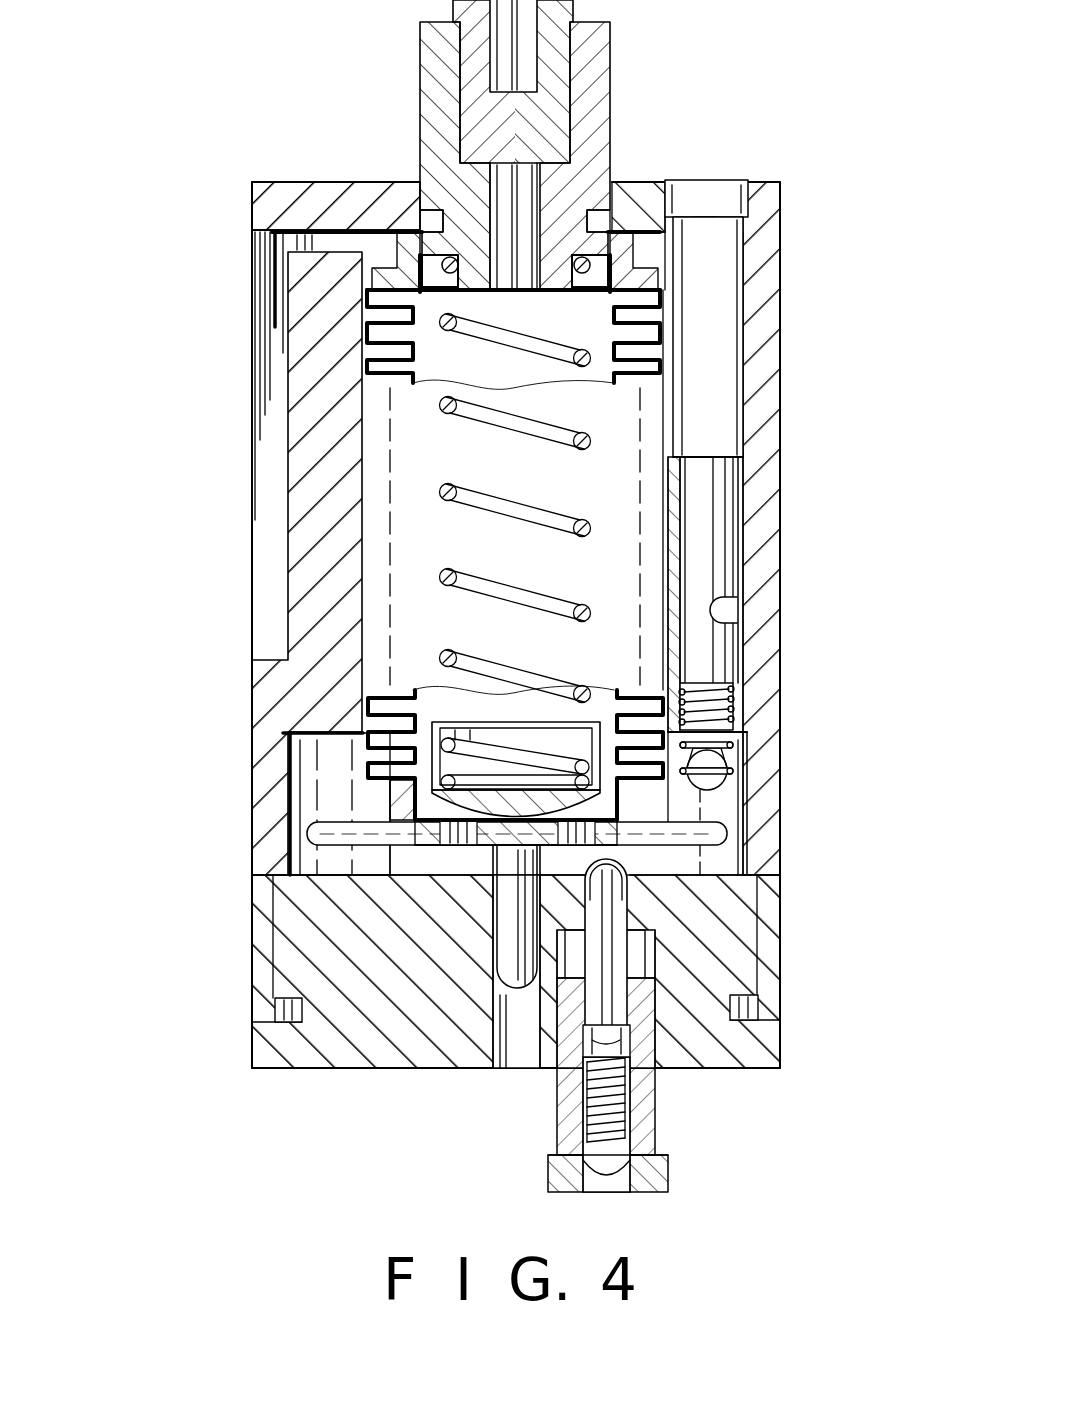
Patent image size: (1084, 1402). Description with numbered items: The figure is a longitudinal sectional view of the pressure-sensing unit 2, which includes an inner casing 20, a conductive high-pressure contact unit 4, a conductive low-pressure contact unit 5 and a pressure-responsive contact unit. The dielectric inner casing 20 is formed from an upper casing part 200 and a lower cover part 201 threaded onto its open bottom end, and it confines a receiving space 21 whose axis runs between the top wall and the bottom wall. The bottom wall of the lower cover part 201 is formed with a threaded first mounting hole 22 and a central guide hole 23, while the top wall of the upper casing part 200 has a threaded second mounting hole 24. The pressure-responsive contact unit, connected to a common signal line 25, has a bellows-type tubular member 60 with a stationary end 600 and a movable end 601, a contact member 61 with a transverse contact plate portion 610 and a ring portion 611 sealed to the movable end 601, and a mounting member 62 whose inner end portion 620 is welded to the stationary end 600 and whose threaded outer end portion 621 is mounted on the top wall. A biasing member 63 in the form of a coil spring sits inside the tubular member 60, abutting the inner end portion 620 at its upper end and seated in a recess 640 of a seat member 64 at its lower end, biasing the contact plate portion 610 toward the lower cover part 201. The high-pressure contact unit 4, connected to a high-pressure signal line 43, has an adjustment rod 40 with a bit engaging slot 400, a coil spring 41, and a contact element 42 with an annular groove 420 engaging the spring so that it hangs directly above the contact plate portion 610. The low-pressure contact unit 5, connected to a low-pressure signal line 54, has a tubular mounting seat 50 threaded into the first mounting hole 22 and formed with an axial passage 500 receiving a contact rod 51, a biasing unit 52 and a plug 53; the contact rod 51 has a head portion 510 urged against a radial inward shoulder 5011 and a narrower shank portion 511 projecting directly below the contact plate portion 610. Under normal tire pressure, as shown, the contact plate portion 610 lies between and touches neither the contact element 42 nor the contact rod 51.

The pressure-sensing unit 2 is at (787, 489).
The inner casing 20 is at (231, 1112).
The upper casing part 200 is at (267, 992).
The lower cover part 201 is at (263, 1066).
The receiving space 21 is at (657, 495).
The first mounting hole 22 is at (613, 892).
The central guide hole 23 is at (487, 997).
The second mounting hole 24 is at (718, 598).
The common signal line 25 is at (276, 284).
The high-pressure contact unit 4 is at (794, 782).
The adjustment rod 40 is at (710, 563).
The bit engaging slot 400 is at (705, 243).
The coil spring 41 is at (735, 718).
The contact element 42 is at (715, 790).
The annular groove 420 is at (730, 770).
The high-pressure signal line 43 is at (730, 174).
The low-pressure contact unit 5 is at (586, 1043).
The tubular mounting seat 50 is at (642, 1040).
The axially extending passage 500 is at (602, 1135).
The radial inward shoulder 5011 is at (604, 1040).
The contact rod 51 is at (495, 1127).
The head portion 510 is at (606, 1043).
The shank portion 511 is at (495, 1010).
The biasing unit 52 is at (600, 1128).
The plug 53 is at (615, 1180).
The low-pressure signal line 54 is at (720, 1193).
The tubular member 60 is at (300, 377).
The stationary end 600 is at (420, 266).
The movable end 601 is at (415, 800).
The contact member 61 is at (292, 842).
The contact plate portion 610 is at (307, 840).
The ring portion 611 is at (407, 812).
The mounting member 62 is at (390, 258).
The inner end portion 620 is at (445, 292).
The outer end portion 621 is at (425, 57).
The biasing member 63 is at (385, 503).
The seat member 64 is at (432, 775).
The recess 640 is at (420, 688).